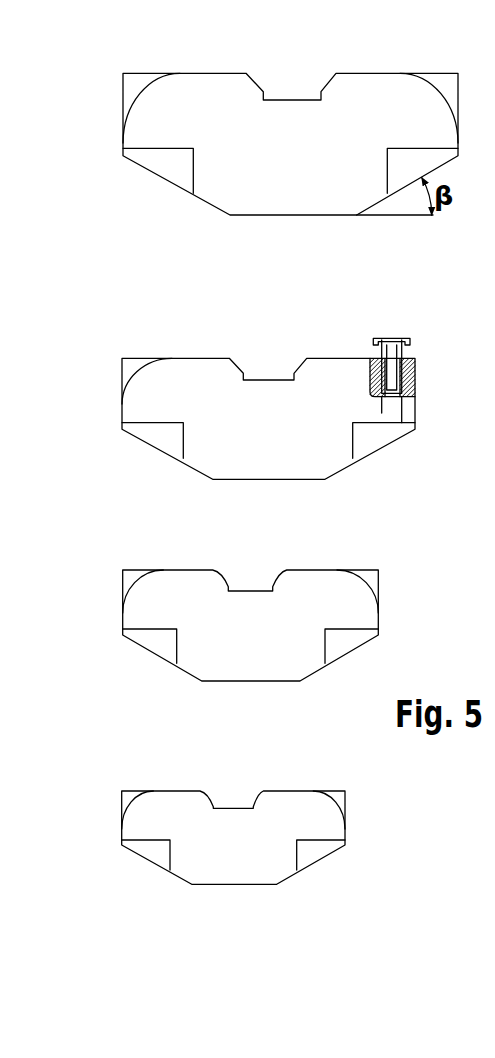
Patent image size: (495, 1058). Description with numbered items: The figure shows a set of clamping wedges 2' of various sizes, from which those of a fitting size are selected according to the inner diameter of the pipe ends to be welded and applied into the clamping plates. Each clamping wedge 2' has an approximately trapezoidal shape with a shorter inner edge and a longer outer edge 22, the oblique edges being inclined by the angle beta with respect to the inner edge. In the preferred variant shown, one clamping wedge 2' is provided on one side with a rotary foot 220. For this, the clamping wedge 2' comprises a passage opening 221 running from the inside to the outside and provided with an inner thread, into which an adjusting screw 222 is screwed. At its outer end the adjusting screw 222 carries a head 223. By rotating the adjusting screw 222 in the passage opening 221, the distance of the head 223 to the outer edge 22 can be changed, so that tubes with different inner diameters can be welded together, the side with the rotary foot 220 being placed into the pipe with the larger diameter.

The clamping wedge 2' is at (252, 477).
The outer edge 22 is at (320, 357).
The rotary foot 220 is at (371, 340).
The passage opening 221 is at (384, 412).
The adjusting screw 222 is at (390, 369).
The head 223 is at (400, 334).